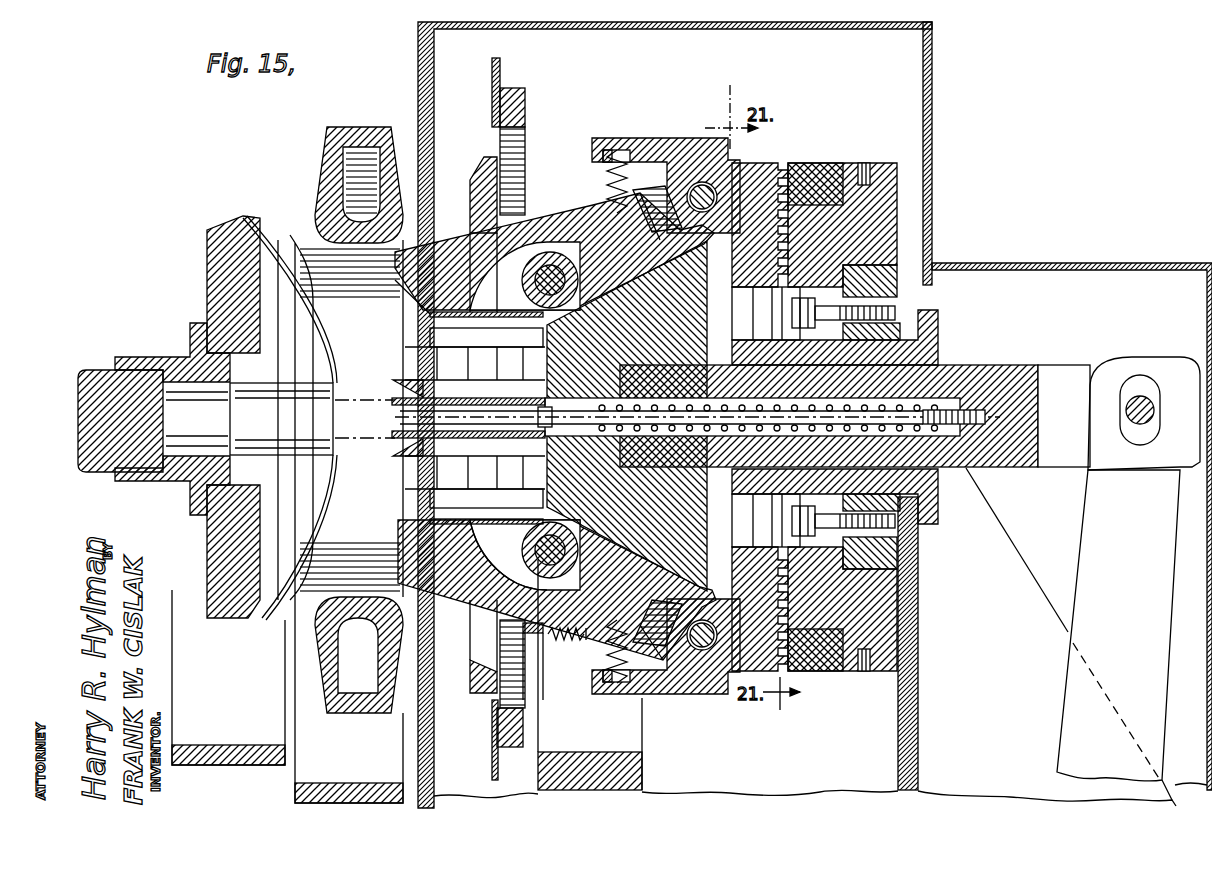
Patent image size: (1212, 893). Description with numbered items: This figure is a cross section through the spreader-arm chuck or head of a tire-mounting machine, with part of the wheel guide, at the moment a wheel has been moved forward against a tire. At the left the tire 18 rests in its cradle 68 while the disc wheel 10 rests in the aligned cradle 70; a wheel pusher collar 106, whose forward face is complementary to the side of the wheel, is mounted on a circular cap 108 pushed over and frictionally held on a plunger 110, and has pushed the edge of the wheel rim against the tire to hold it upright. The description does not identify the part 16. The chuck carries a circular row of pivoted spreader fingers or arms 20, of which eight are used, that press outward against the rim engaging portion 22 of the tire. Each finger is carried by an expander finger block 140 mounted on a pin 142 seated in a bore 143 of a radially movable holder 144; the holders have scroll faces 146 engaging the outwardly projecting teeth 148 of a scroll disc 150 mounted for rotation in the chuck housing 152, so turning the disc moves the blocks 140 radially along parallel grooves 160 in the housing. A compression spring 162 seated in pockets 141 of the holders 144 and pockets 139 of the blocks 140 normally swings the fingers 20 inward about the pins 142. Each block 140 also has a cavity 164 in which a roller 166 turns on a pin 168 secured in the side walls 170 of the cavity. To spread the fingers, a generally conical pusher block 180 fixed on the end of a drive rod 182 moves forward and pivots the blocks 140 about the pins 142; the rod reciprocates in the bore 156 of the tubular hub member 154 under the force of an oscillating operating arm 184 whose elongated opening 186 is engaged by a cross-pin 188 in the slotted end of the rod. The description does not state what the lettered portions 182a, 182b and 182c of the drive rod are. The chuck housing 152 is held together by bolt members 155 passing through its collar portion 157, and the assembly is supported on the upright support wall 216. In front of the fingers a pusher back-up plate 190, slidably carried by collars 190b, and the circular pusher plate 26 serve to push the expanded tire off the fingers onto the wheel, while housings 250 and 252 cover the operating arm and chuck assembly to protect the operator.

The disc wheel 10 is at (258, 615).
The shaft 16 is at (300, 455).
The tire 18 is at (325, 136).
The pivoted arms 20 is at (434, 238).
The rim engaging portion 22 is at (346, 417).
The circular pusher plate 26 is at (492, 701).
The cradle 68 is at (290, 777).
The cradle 70 is at (228, 766).
The wheel pusher collar 106 is at (207, 240).
The circular cap 108 is at (182, 492).
The plunger 110 is at (96, 372).
The pockets 139 is at (606, 220).
The expander finger blocks 140 is at (395, 301).
The pockets 141 is at (603, 158).
The pin members 142 is at (700, 182).
The bore 143 is at (880, 262).
The radially movable holders 144 is at (650, 140).
The scroll faces 146 is at (770, 190).
The outwardly projecting teeth 148 is at (860, 225).
The scroll disc 150 is at (856, 668).
The chuck housing 152 is at (828, 677).
The tubular hub member 154 is at (935, 505).
The bolt members 155 is at (900, 312).
The bore 156 is at (930, 352).
The collar portion 157 is at (870, 595).
The parallel grooves 160 is at (762, 512).
The compression spring 162 is at (608, 178).
The cavity 164 is at (480, 598).
The roller 166 is at (511, 639).
The pin 168 is at (560, 542).
The side walls 170 is at (508, 555).
The pusher block 180 is at (627, 416).
The drive rod 182 is at (1020, 458).
The threaded end 182a is at (985, 410).
The sleeve 182b is at (395, 402).
The rod 182c is at (812, 407).
The operating arm 184 is at (1065, 699).
The elongated opening 186 is at (1120, 380).
The cross-pin 188 is at (1135, 442).
The pusher back-up plate 190 is at (518, 733).
The collars 190b is at (492, 770).
The support wall 216 is at (908, 741).
The housing 250 is at (1118, 263).
The housing 252 is at (932, 121).